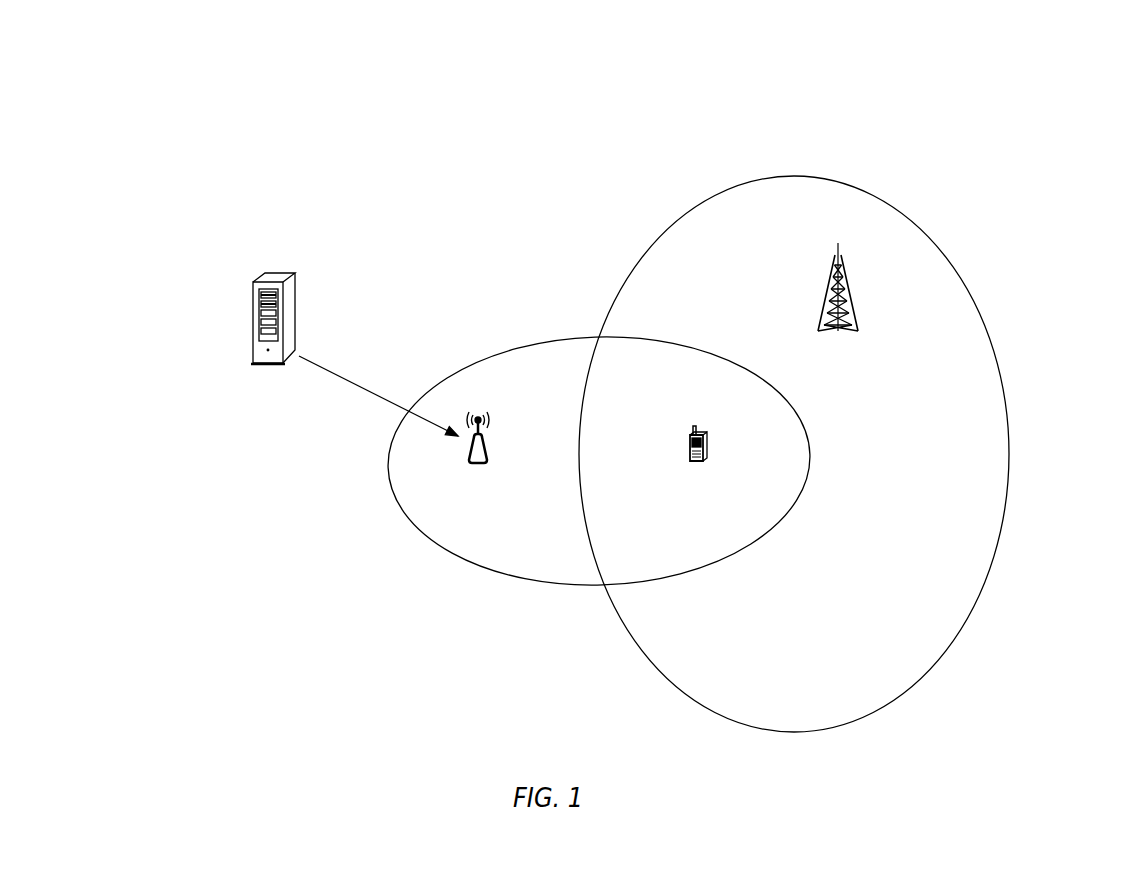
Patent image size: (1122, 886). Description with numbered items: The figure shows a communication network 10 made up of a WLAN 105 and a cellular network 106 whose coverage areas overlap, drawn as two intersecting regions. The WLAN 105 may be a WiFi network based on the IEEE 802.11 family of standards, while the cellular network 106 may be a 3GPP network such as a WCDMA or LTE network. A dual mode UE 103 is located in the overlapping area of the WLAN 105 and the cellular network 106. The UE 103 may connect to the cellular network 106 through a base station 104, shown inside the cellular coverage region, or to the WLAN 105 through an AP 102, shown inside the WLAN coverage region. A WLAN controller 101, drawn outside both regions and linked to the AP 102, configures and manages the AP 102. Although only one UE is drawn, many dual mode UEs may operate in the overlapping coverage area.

The communication network 10 is at (552, 84).
The WLAN controller 101 is at (264, 274).
The AP 102 is at (478, 408).
The dual mode UE 103 is at (688, 423).
The base station 104 is at (832, 241).
The WLAN 105 is at (533, 580).
The cellular network 106 is at (1008, 503).